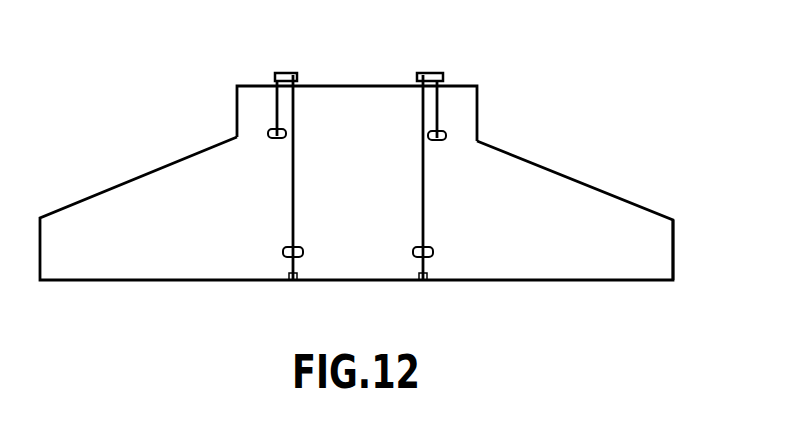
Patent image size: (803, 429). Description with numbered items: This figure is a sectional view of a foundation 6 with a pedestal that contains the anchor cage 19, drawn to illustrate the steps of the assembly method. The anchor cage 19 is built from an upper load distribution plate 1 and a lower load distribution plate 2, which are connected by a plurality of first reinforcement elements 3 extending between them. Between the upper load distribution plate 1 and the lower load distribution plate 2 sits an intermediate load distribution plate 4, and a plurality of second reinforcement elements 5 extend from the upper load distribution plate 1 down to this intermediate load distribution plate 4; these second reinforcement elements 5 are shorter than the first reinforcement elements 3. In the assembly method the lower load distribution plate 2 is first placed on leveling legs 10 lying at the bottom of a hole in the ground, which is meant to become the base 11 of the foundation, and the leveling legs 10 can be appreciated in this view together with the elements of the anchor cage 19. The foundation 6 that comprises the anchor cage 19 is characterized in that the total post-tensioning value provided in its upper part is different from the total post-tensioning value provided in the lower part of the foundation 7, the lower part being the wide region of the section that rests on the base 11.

The upper load distribution plate 1 is at (441, 81).
The lower load distribution plate 2 is at (283, 250).
The first reinforcement element 3 is at (290, 182).
The intermediate load distribution plate 4 is at (268, 133).
The second reinforcement element 5 is at (438, 108).
The foundation 6 is at (236, 103).
The lower part of the foundation 7 is at (676, 244).
The leveling leg 10 is at (300, 258).
The base of the foundation 11 is at (545, 283).
The anchor cage 19 is at (455, 202).